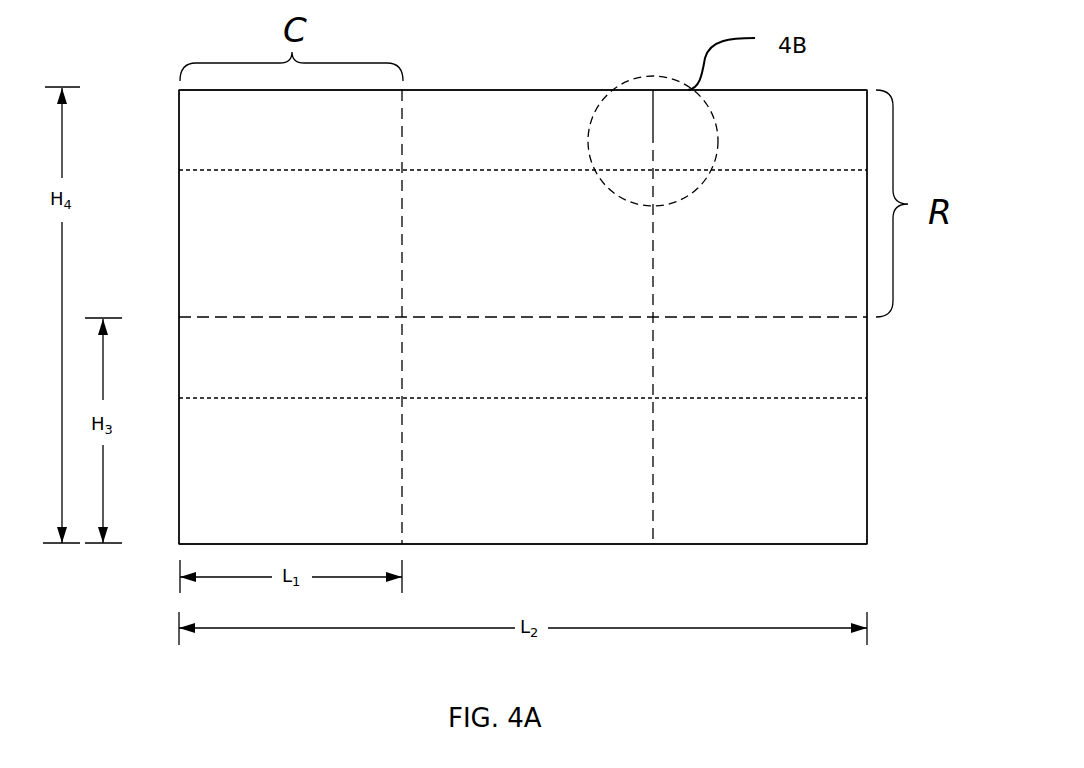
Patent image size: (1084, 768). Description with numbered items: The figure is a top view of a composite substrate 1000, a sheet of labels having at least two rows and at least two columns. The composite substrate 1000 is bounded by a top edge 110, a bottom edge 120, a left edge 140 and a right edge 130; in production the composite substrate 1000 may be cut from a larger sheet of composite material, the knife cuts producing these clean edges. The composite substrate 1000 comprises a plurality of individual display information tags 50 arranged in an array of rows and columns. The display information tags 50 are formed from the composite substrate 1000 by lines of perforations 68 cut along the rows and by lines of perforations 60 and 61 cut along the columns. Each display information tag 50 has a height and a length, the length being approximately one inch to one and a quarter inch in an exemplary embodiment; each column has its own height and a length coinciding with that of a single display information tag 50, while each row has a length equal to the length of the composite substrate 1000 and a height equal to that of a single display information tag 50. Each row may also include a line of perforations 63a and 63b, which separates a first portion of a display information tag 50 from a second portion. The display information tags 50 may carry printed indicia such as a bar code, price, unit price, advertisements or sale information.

The display information tag 50 is at (857, 502).
The line of perforations 60 is at (653, 112).
The line of perforations 61 is at (653, 232).
The line of perforations 63a is at (782, 170).
The line of perforations 63b is at (835, 398).
The lines of perforations 68 is at (828, 318).
The top edge 110 is at (498, 90).
The bottom edge 120 is at (577, 545).
The right edge 130 is at (868, 372).
The left edge 140 is at (180, 145).
The composite substrate 1000 is at (554, 350).